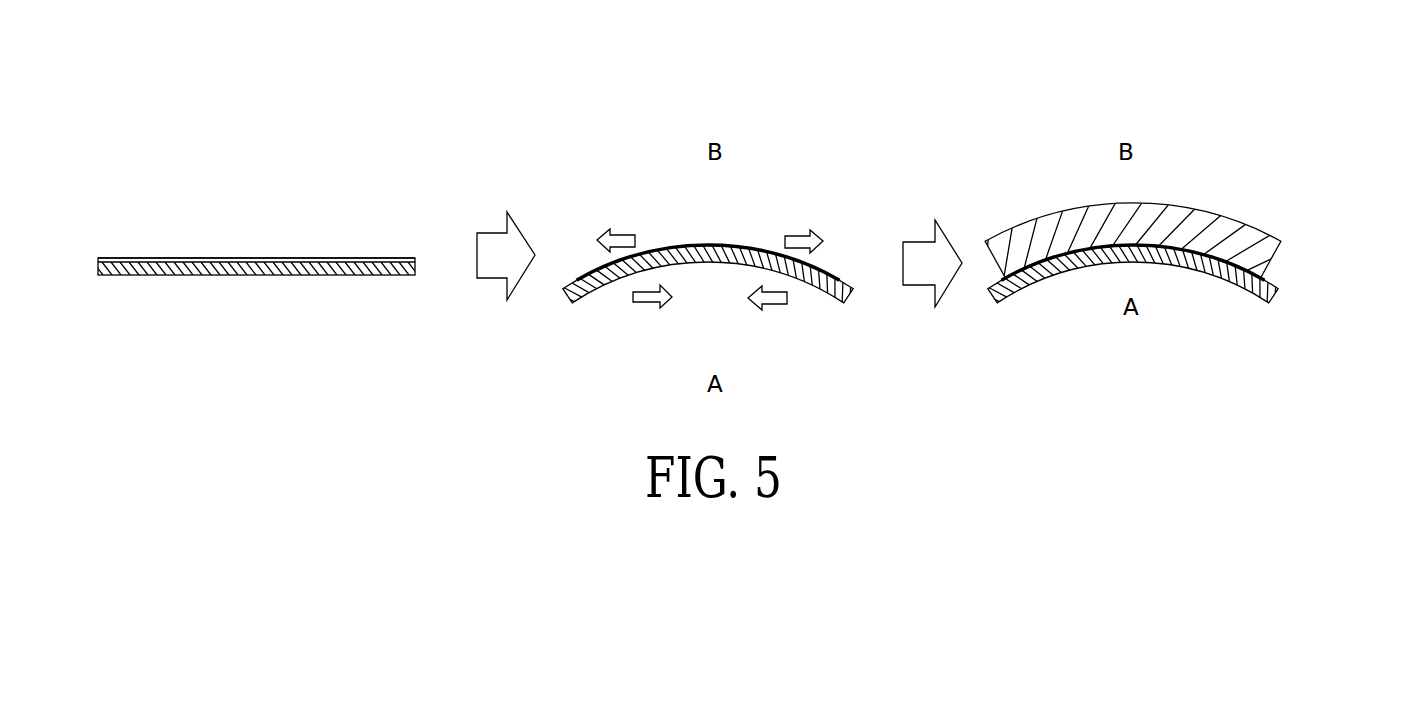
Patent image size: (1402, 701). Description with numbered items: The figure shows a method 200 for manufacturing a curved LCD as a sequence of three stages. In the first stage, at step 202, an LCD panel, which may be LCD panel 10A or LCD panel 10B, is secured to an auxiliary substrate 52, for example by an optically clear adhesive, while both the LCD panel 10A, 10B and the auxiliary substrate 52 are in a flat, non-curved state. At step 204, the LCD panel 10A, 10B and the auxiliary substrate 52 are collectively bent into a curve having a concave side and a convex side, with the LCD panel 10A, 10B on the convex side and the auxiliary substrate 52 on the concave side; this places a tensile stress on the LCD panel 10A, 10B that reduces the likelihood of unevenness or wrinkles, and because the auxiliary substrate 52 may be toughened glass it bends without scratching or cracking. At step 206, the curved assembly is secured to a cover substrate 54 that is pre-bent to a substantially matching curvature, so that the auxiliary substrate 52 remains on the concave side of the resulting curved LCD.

The method for manufacturing a curved LCD 200 is at (1251, 51).
The securing step 202 is at (214, 198).
The bending step 204 is at (489, 233).
The securing to cover substrate step 206 is at (917, 242).
The auxiliary substrate 52 is at (366, 273).
The LCD panel 10A is at (735, 231).
The LCD panel 10B is at (325, 258).
The cover substrate 54 is at (1208, 227).